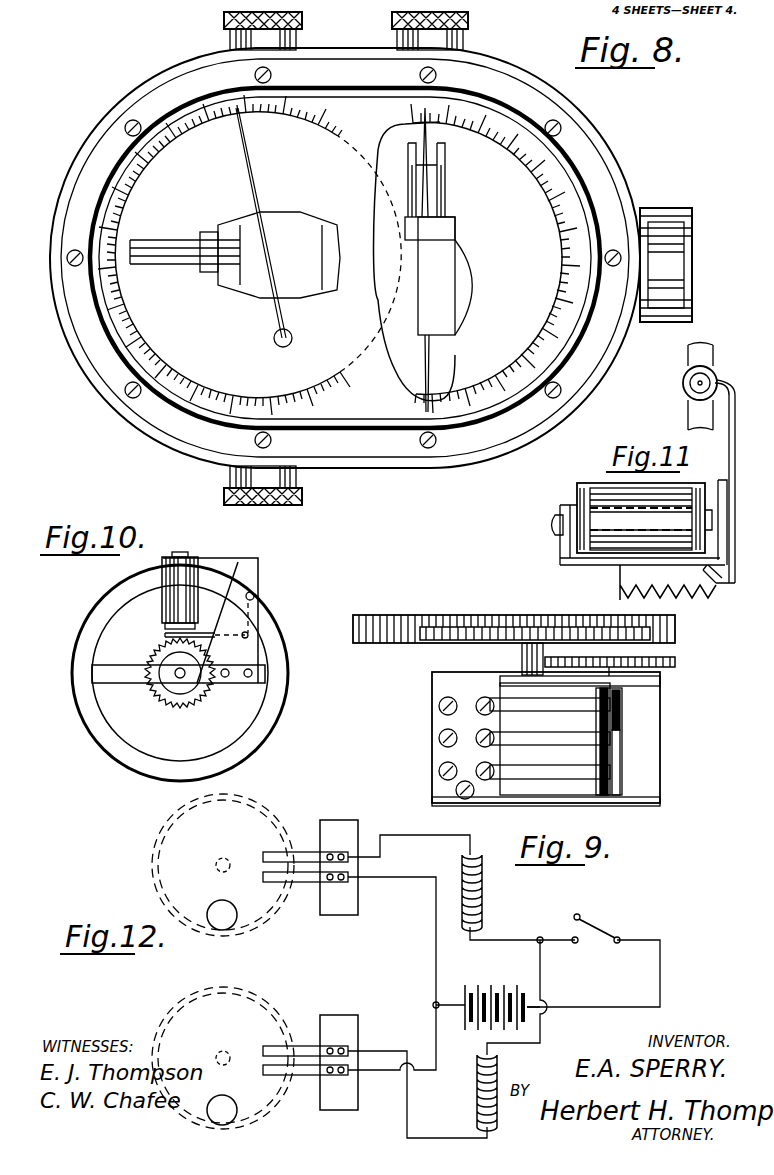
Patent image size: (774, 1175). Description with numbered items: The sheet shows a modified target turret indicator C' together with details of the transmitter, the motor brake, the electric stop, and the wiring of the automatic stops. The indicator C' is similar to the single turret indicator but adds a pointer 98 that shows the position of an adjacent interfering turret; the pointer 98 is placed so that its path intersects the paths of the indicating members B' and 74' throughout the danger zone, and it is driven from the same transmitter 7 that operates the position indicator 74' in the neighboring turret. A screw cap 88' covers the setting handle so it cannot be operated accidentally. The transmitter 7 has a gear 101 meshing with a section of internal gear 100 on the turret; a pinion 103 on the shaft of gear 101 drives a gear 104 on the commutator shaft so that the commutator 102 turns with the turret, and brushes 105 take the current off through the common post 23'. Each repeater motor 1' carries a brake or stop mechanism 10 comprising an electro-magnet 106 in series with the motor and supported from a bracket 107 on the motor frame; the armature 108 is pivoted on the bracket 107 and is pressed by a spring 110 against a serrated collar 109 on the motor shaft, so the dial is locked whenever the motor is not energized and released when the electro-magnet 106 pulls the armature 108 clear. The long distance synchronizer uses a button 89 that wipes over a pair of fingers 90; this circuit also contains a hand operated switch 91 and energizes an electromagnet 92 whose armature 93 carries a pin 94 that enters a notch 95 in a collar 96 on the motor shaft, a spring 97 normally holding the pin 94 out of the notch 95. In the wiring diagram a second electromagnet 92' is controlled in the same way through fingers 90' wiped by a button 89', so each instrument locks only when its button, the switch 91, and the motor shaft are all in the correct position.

In FIG. 8, the screw cap 88' is at (245, 30).
In FIG. 8, the multiple turret target indicator C' is at (347, 258).
In FIG. 8, the indicating member B' is at (264, 227).
In FIG. 8, the position indicator 74' is at (235, 255).
In FIG. 8, the pointer 98 is at (423, 260).
In FIG. 11, the collar 96 is at (684, 392).
In FIG. 11, the pin 94 is at (730, 379).
In FIG. 11, the notch 95 is at (723, 397).
In FIG. 11, the armature 93 is at (734, 478).
In FIG. 11, the electromagnet 92 is at (640, 512).
In FIG. 12, the electromagnet 92 is at (444, 887).
In FIG. 11, the spring 97 is at (702, 597).
In FIG. 10, the repeater motor 1' is at (192, 673).
In FIG. 10, the bracket 107 is at (178, 620).
In FIG. 10, the spring 110 is at (254, 600).
In FIG. 10, the brake or stop mechanism 10 is at (162, 565).
In FIG. 10, the electro-magnet 106 is at (168, 614).
In FIG. 10, the armature 108 is at (165, 635).
In FIG. 10, the serrated collar 109 is at (163, 698).
In FIG. 9, the internal gear 100 is at (514, 641).
In FIG. 9, the gear 101 is at (528, 627).
In FIG. 9, the pinion 103 is at (522, 660).
In FIG. 9, the gear 104 is at (676, 661).
In FIG. 9, the transmitter 7 is at (432, 688).
In FIG. 9, the common post 23' is at (464, 803).
In FIG. 9, the brushes 105 is at (558, 712).
In FIG. 9, the commutator 102 is at (622, 735).
In FIG. 12, the button 89 is at (223, 878).
In FIG. 12, the fingers 90 is at (310, 858).
In FIG. 12, the hand operated switch 91 is at (600, 930).
In FIG. 12, the electromagnet 92' is at (447, 1094).
In FIG. 12, the fingers 90' is at (349, 993).
In FIG. 12, the button 89' is at (225, 1067).